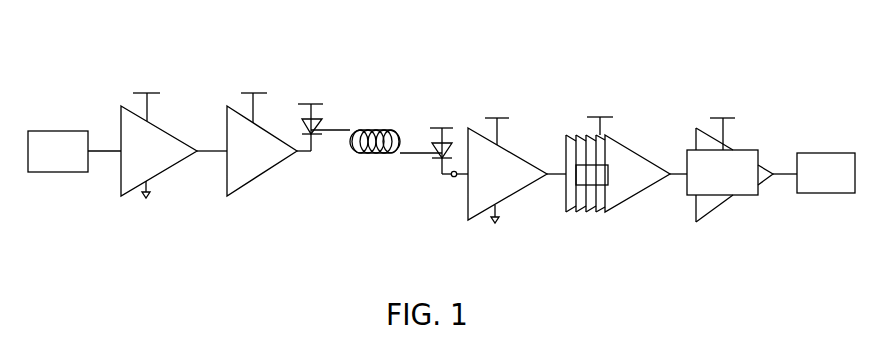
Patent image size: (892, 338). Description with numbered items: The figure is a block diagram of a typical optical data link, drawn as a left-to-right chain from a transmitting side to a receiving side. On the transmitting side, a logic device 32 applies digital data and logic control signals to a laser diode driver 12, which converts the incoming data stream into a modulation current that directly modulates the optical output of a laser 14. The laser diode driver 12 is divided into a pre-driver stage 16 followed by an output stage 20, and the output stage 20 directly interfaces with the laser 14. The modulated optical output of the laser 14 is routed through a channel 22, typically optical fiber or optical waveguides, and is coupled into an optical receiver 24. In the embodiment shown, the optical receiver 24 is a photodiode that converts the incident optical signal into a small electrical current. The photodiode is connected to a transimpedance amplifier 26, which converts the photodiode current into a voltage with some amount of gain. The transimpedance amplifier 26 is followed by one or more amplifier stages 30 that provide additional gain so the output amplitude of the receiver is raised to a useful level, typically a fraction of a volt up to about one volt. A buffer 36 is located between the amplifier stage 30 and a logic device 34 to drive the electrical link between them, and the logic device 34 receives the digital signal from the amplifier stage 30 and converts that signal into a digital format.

The laser diode driver 12 is at (133, 50).
The laser 14 is at (350, 103).
The pre-driver stage 16 is at (168, 170).
The output stage 20 is at (260, 176).
The channel 22 is at (390, 130).
The optical receiver 24 is at (437, 192).
The transimpedance amplifier 26 is at (517, 192).
The amplifier stage 30 is at (573, 113).
The logic device 32 is at (57, 131).
The logic device 34 is at (825, 153).
The buffer 36 is at (723, 207).